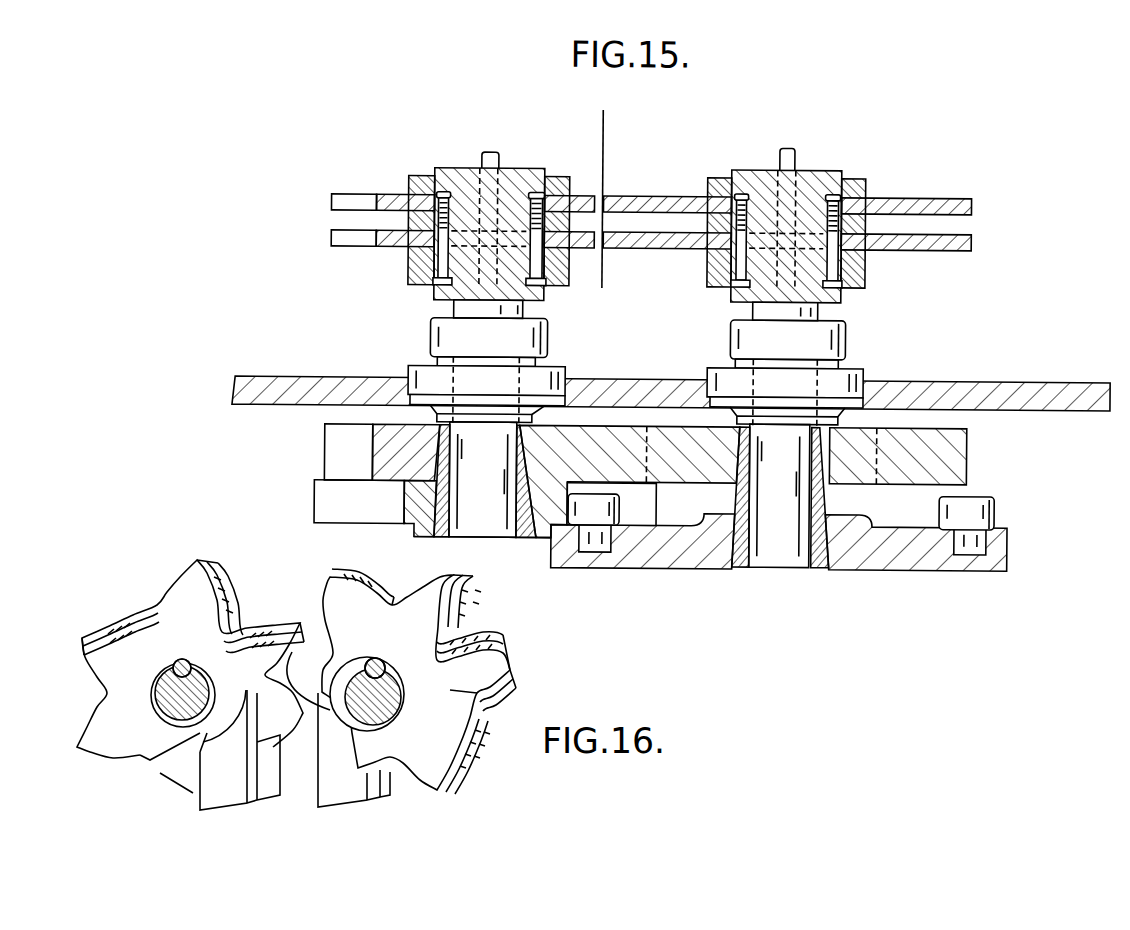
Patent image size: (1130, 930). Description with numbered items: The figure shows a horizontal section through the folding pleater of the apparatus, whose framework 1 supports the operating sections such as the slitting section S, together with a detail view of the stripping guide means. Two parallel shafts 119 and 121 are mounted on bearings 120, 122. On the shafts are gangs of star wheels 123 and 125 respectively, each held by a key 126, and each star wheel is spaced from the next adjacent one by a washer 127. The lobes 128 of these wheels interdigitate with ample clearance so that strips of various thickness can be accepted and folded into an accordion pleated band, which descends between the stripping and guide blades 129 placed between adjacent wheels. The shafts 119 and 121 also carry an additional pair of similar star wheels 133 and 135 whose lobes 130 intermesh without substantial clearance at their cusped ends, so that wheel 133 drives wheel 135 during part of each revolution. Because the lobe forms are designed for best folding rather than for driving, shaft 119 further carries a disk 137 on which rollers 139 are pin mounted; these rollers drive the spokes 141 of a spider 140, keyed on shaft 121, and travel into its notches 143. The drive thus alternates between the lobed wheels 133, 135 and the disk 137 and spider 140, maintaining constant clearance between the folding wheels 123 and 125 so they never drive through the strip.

In FIG. 15, the framework 1 is at (336, 380).
In FIG. 15, the slitting section S is at (602, 150).
In FIG. 15, the shaft 119 is at (812, 310).
In FIG. 16, the shaft 119 is at (390, 703).
In FIG. 15, the bearing 120 is at (840, 378).
In FIG. 15, the shaft 121 is at (462, 312).
In FIG. 16, the shaft 121 is at (177, 707).
In FIG. 15, the bearing 122 is at (547, 378).
In FIG. 15, the star wheels 123 is at (972, 242).
In FIG. 16, the star wheels 123 is at (117, 657).
In FIG. 15, the star wheels 125 is at (331, 240).
In FIG. 15, the key 126 is at (507, 133).
In FIG. 16, the key 126 is at (192, 646).
In FIG. 15, the washer 127 is at (414, 222).
In FIG. 16, the washer 127 is at (197, 733).
In FIG. 16, the lobes 128 is at (353, 573).
In FIG. 16, the stripping and guide blades 129 is at (343, 790).
In FIG. 15, the lobes 130 is at (335, 452).
In FIG. 15, the star wheel 133 is at (712, 465).
In FIG. 15, the star wheel 135 is at (425, 460).
In FIG. 15, the disk 137 is at (700, 557).
In FIG. 15, the rollers 139 is at (612, 510).
In FIG. 15, the spider 140 is at (418, 495).
In FIG. 15, the spokes 141 is at (322, 498).
In FIG. 15, the notches 143 is at (400, 527).